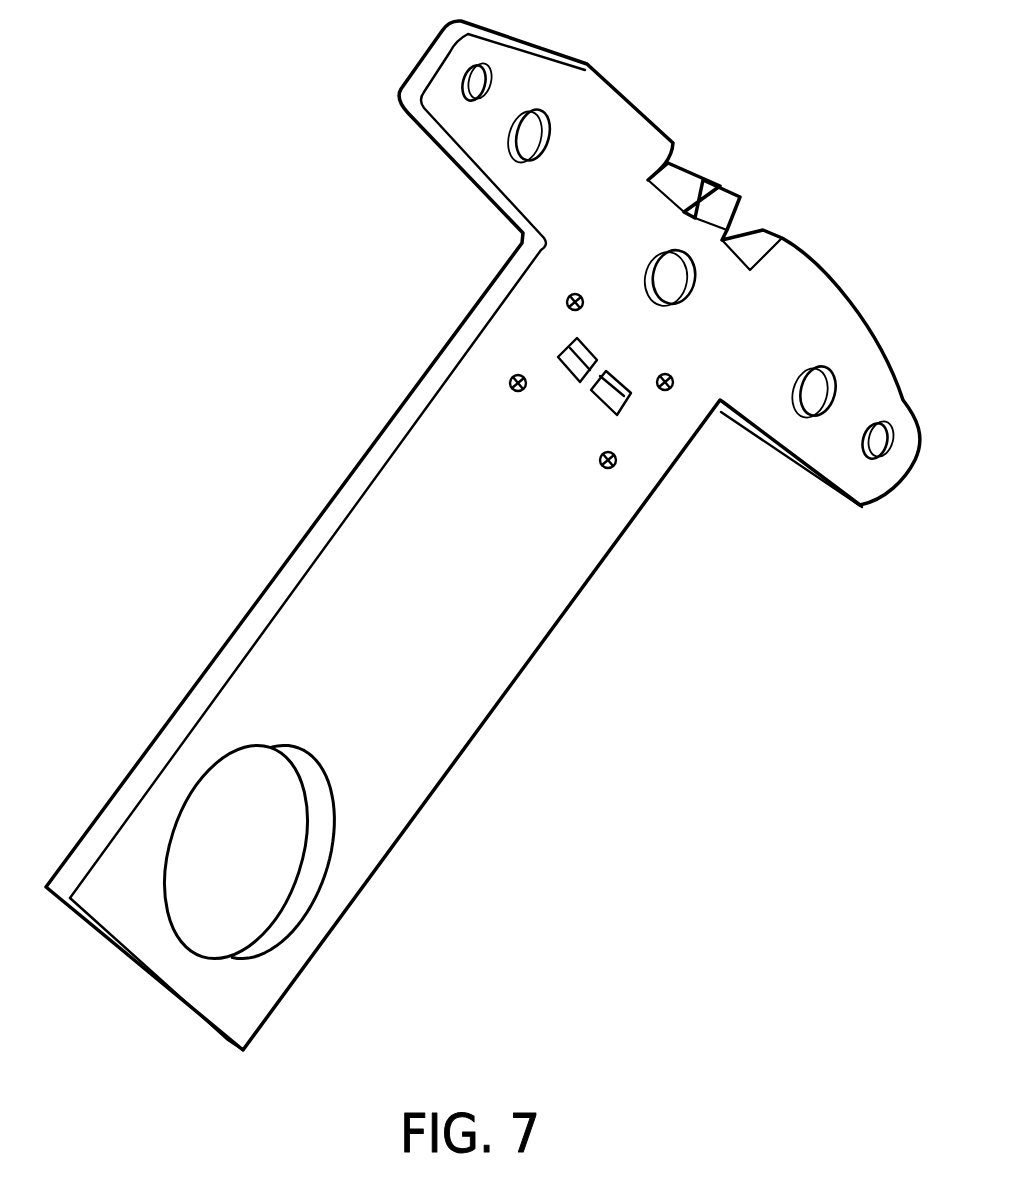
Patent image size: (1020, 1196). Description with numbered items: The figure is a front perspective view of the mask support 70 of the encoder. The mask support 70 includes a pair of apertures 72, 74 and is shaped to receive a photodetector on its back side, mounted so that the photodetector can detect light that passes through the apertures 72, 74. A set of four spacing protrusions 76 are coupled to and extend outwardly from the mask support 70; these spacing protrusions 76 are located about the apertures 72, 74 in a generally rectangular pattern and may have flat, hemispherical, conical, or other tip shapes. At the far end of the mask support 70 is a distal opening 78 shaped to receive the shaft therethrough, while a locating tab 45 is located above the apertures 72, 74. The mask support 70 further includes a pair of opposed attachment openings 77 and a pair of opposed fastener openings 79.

The mask support 70 is at (533, 652).
The aperture 72 is at (625, 410).
The aperture 74 is at (562, 348).
The spacing protrusion 76 is at (582, 294).
The attachment opening 77 is at (488, 82).
The distal opening 78 is at (262, 853).
The fastener opening 79 is at (551, 137).
The locating tab 45 is at (694, 283).